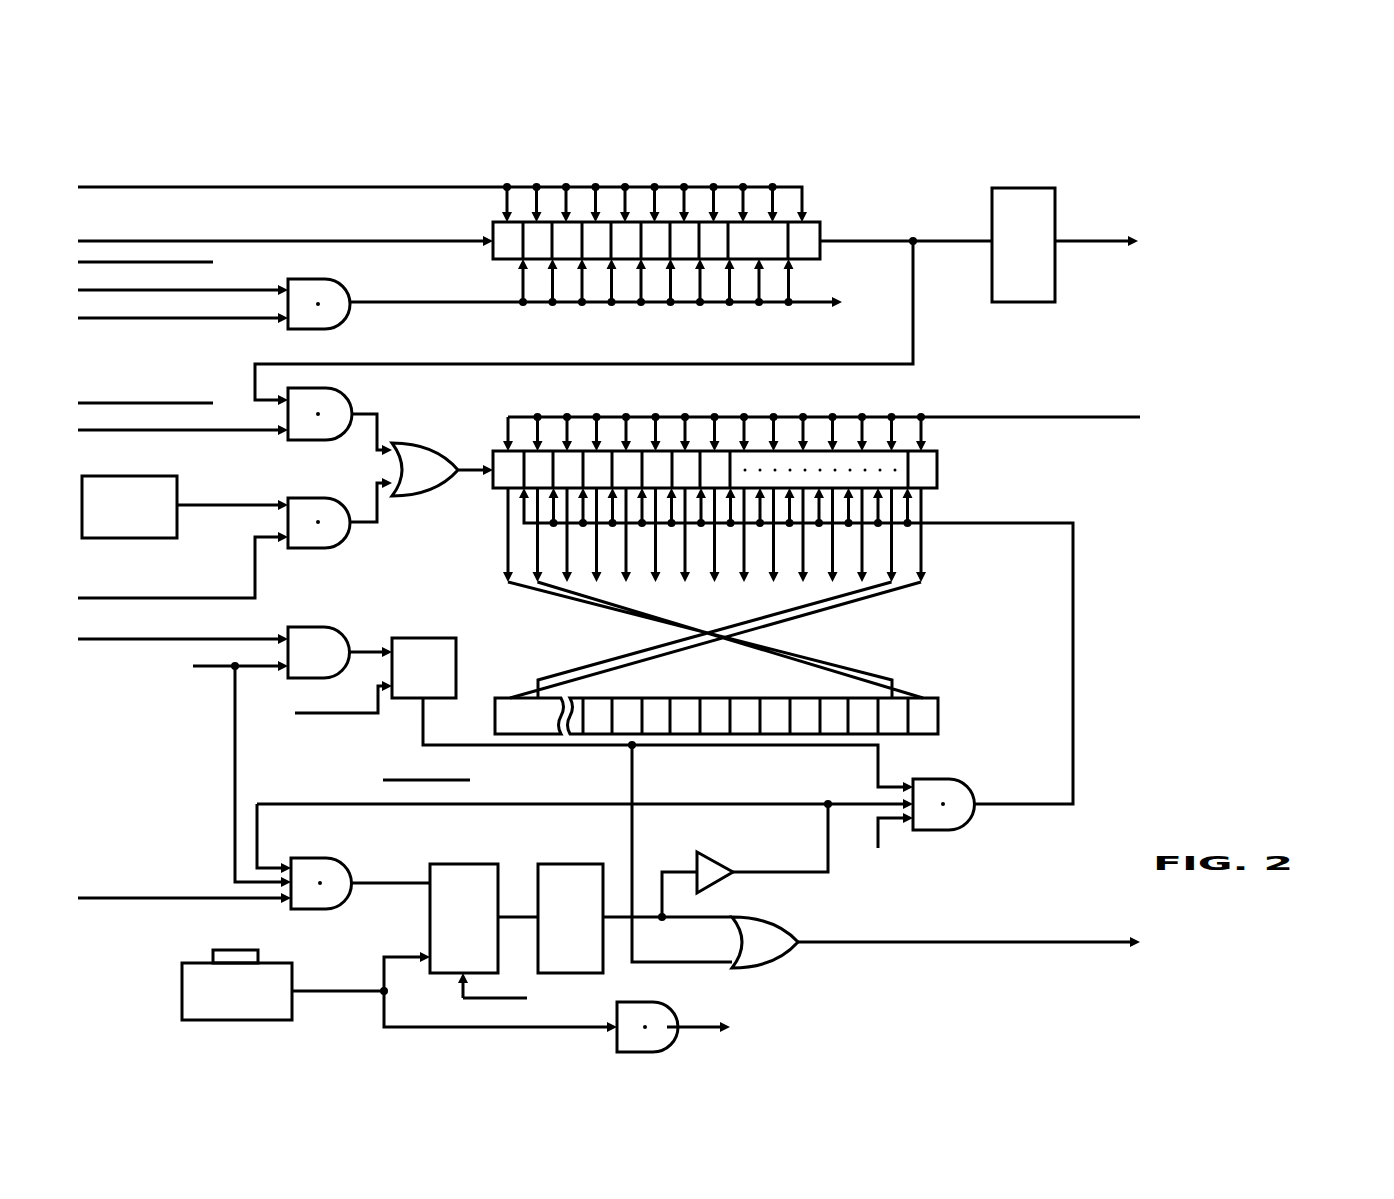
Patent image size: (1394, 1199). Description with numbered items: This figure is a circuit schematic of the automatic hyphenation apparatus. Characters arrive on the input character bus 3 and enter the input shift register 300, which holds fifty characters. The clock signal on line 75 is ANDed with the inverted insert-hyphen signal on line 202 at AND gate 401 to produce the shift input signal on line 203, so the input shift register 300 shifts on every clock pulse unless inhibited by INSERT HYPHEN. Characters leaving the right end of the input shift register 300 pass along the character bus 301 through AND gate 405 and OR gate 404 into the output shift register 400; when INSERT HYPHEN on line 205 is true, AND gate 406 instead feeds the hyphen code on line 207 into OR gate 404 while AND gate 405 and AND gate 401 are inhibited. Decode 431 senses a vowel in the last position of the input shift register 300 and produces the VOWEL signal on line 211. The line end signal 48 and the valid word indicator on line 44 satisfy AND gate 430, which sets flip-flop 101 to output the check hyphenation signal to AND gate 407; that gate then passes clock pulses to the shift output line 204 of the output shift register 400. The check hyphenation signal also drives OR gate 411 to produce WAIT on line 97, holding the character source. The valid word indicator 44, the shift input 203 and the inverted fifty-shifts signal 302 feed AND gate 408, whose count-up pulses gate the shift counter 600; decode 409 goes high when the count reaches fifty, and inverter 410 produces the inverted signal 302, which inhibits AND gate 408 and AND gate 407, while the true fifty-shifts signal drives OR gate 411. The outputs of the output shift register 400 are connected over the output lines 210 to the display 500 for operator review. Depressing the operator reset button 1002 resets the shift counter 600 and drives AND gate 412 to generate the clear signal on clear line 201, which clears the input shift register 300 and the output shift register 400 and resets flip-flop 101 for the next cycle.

The clear line 201 is at (289, 186).
The data bus 3 is at (315, 240).
The insert hyphen line 202 is at (244, 289).
The AND gate 401 is at (341, 290).
The clock signal line 75 is at (181, 319).
The shift input line 203 is at (505, 304).
The input shift register 300 is at (820, 222).
The character bus 301 is at (736, 364).
The decode 431 is at (1019, 188).
The VOWEL signal line 211 is at (1104, 240).
The AND gate 405 is at (346, 400).
The OR gate 404 is at (423, 451).
The hyphen code line 207 is at (224, 505).
The AND gate 406 is at (343, 549).
The insert hyphen line 205 is at (255, 578).
The output shift register 400 is at (937, 467).
The output lines 210 is at (597, 560).
The shift output line 204 is at (1073, 573).
The display 500 is at (751, 716).
The line end signal 48 is at (248, 640).
The valid word indicator line 44 is at (222, 668).
The AND gate 430 is at (340, 639).
The flip-flop 101 is at (649, 781).
The inverted 50 SHIFTS signal 302 is at (528, 806).
The AND gate 408 is at (338, 858).
The shift counter 600 is at (486, 862).
The decode 409 is at (581, 862).
The operator reset button 1002 is at (213, 952).
The inverter 410 is at (721, 857).
The OR gate 411 is at (786, 924).
The WAIT signal line 97 is at (981, 943).
The AND gate 407 is at (963, 781).
The AND gate 412 is at (671, 1003).